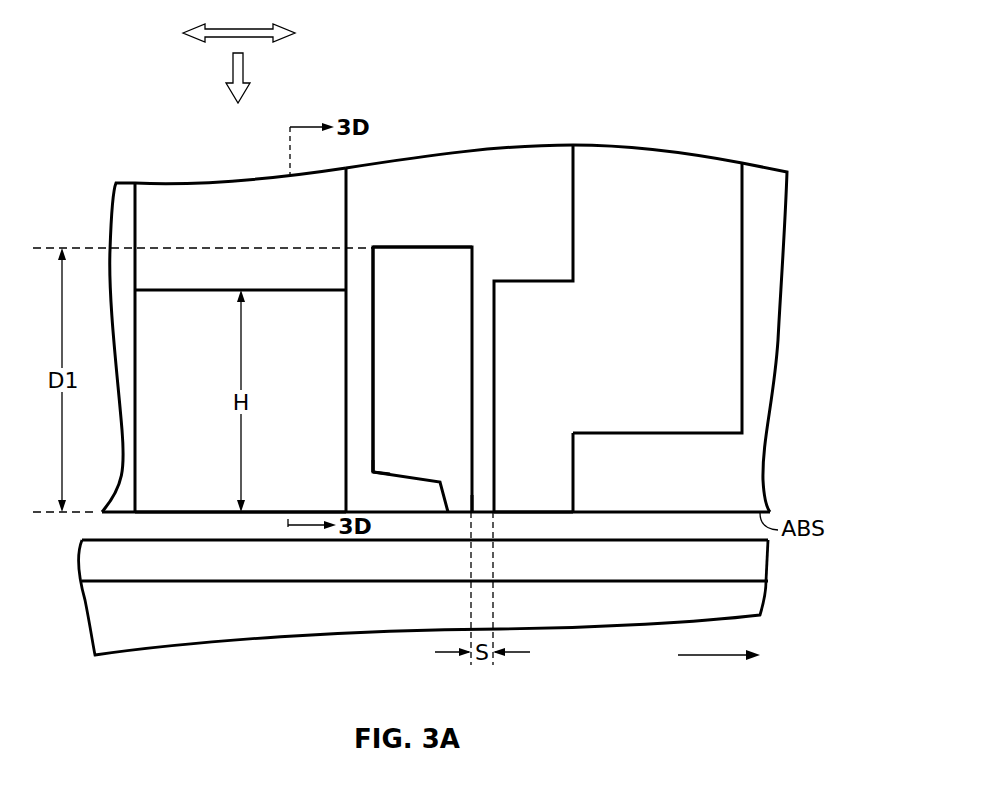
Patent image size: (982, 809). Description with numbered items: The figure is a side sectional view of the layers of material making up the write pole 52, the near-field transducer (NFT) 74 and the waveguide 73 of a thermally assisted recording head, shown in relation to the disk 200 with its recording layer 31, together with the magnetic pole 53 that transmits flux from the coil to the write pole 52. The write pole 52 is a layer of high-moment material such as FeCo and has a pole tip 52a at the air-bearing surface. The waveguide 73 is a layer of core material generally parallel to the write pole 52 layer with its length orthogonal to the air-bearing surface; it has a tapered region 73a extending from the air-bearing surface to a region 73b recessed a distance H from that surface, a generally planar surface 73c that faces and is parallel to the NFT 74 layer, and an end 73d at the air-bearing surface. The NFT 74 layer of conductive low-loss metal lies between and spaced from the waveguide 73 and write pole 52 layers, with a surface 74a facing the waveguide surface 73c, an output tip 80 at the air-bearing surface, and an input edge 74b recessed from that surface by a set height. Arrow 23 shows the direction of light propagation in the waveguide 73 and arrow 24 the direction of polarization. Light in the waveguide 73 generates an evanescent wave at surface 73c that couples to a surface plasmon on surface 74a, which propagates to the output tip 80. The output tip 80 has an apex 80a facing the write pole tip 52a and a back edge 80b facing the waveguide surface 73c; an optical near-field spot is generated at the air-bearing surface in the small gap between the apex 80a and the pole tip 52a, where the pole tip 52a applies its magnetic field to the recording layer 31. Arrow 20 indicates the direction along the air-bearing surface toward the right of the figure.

The direction along ABS / track width direction 20 is at (705, 657).
The arrow 23 is at (232, 82).
The arrow 24 is at (268, 28).
The recording layer 31 is at (755, 567).
The write pole 52 is at (560, 482).
The pole tip 52a is at (563, 514).
The magnetic pole 53 is at (723, 215).
The waveguide 73 is at (170, 192).
The tapered region 73a is at (152, 445).
The region 73b is at (213, 289).
The planar surface 73c is at (346, 392).
The end 73d is at (168, 515).
The near-field transducer 74 is at (452, 274).
The surface 74a is at (363, 312).
The input edge 74b is at (382, 247).
The output tip 80 is at (452, 490).
The apex 80a is at (472, 515).
The back edge 80b is at (373, 465).
The disk 200 is at (757, 598).